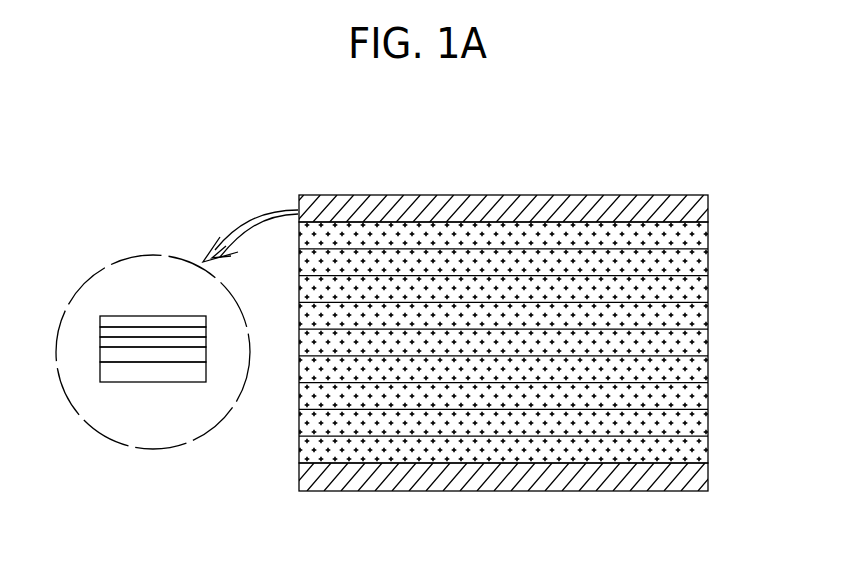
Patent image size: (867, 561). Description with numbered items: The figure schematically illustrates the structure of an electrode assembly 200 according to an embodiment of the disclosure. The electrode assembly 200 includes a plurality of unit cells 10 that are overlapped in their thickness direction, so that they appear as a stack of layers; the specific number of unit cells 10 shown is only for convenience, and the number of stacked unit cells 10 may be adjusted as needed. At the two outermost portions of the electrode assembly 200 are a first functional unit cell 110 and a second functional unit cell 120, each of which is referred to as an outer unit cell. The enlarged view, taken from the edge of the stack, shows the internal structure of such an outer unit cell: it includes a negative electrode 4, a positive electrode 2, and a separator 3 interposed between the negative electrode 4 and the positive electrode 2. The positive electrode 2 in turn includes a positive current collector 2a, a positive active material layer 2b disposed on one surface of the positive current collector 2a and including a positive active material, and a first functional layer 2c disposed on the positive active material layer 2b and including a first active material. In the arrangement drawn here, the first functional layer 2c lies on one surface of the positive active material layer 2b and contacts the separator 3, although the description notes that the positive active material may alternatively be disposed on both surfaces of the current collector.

The electrode assembly 200 is at (520, 297).
The first functional unit cell 110 is at (705, 208).
The unit cells 10 is at (705, 235).
The second functional unit cell 120 is at (703, 478).
The positive electrode 2 is at (177, 332).
The positive current collector 2a is at (206, 321).
The positive active material layer 2b is at (206, 332).
The first functional layer 2c is at (206, 342).
The separator 3 is at (206, 354).
The negative electrode 4 is at (204, 374).